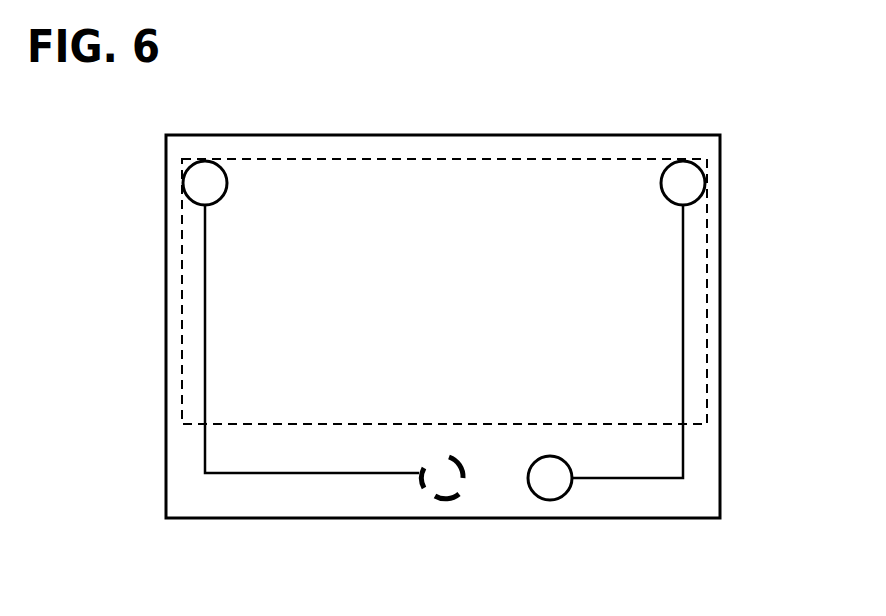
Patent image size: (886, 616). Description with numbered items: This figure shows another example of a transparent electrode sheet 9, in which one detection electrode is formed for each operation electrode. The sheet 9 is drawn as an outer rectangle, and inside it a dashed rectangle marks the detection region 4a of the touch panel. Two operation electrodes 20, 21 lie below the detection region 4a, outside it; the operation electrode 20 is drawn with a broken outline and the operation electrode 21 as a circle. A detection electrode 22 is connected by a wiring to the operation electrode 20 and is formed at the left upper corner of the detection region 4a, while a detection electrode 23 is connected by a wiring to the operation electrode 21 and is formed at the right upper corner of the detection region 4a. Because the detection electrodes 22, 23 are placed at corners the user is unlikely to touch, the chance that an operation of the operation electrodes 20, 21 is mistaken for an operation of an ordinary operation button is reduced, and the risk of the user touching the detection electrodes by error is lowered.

The transparent electrode sheet 9 is at (720, 455).
The detection region 4a is at (707, 273).
The detection electrode 22 is at (227, 181).
The detection electrode 23 is at (661, 181).
The operation electrode 20 is at (457, 502).
The operation electrode 21 is at (567, 503).